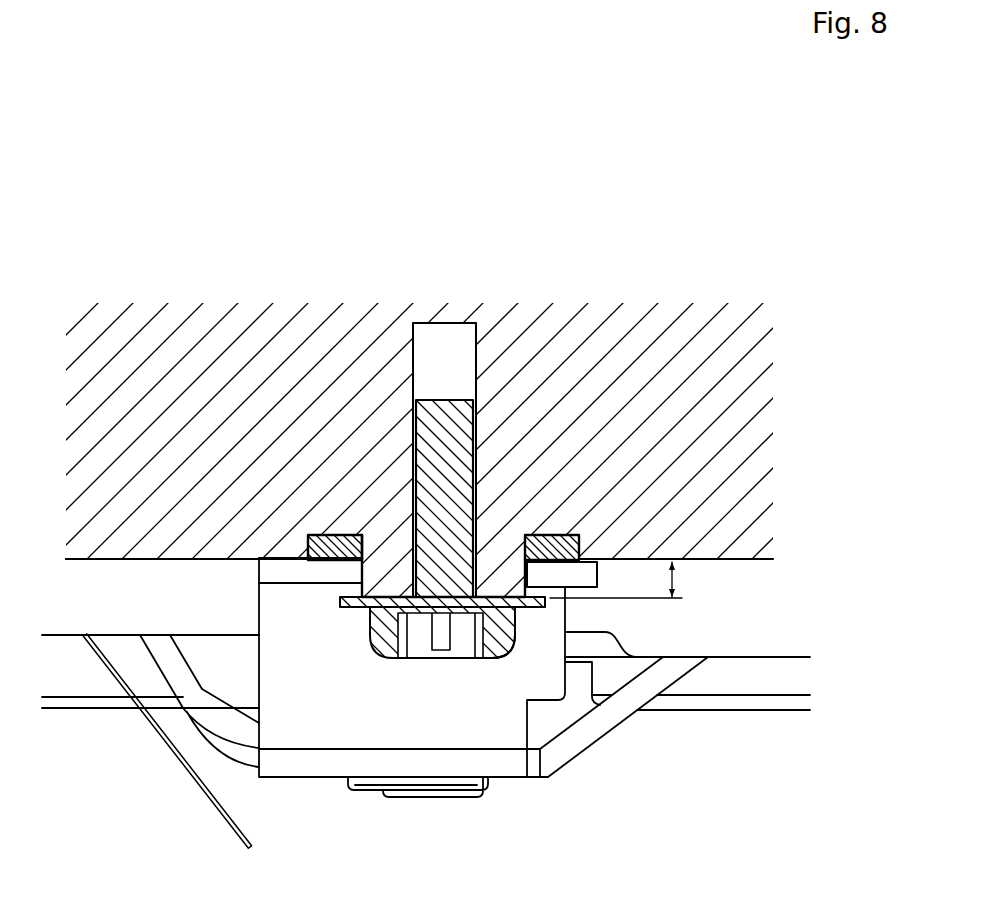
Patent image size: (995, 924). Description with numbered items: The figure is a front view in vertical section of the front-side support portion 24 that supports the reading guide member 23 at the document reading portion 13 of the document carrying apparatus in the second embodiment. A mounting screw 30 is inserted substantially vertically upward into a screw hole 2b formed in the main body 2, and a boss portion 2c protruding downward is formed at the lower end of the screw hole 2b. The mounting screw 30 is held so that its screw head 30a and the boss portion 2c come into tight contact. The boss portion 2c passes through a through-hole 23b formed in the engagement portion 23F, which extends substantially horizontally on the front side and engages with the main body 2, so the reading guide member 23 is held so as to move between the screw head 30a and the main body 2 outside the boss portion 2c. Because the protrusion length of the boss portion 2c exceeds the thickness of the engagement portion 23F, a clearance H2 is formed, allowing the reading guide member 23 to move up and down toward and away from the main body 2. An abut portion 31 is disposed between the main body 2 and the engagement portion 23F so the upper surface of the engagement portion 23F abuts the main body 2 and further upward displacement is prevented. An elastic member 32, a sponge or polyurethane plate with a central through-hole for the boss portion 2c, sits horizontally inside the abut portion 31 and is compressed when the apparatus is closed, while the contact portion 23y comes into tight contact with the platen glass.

The main body 2 is at (643, 340).
The screw hole 2b is at (426, 322).
The boss portion 2c is at (487, 578).
The front-side support portion 24 is at (233, 533).
The through-hole 23b is at (355, 575).
The engagement portion 23F is at (292, 582).
The reading guide member 23 is at (299, 789).
The contact portion 23y is at (413, 784).
The mounting screw 30 is at (426, 667).
The screw head 30a is at (508, 633).
The abut portion 31 is at (594, 559).
The elastic member 32 is at (556, 536).
The document reading portion 13 is at (547, 846).
The clearance H2 is at (627, 580).